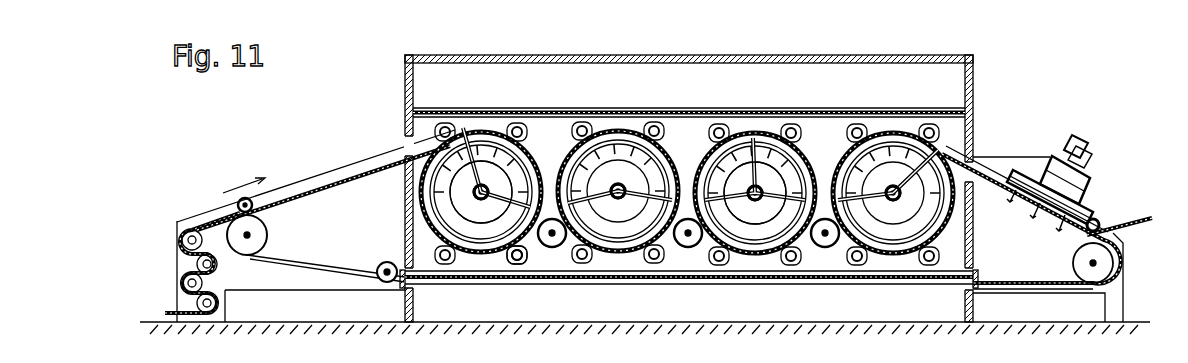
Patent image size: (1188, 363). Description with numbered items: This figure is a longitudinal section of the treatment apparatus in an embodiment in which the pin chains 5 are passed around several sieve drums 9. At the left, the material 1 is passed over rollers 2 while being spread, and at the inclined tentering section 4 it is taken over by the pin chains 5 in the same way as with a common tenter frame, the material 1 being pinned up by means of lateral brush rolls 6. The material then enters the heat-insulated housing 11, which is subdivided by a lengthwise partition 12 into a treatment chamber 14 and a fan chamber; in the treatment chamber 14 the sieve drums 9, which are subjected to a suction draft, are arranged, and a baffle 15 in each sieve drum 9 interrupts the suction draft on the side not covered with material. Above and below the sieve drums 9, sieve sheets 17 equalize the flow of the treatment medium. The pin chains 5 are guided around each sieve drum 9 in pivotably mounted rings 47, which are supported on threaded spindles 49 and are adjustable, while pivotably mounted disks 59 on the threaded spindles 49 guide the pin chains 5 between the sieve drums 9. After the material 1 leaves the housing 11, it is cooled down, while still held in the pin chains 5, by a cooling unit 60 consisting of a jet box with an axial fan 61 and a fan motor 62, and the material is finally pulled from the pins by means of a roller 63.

The material length 1 is at (168, 313).
The rollers 2 is at (200, 258).
The tentering section 4 is at (300, 183).
The pin chains 5 is at (256, 256).
The brush rolls 6 is at (238, 201).
The sieve drums 9 is at (463, 126).
The housing 11 is at (538, 58).
The lengthwise partition 12 is at (825, 132).
The treatment chamber 14 is at (562, 127).
The baffle 15 is at (467, 236).
The sieve sheets 17 is at (670, 112).
The pivotably mounted rings 47 is at (477, 258).
The threaded spindles 49 is at (250, 235).
The pivotably mounted disks 59 is at (552, 248).
The cooling unit 60 is at (1008, 178).
The axial fan 61 is at (1052, 156).
The fan motor 62 is at (1080, 138).
The roller 63 is at (1097, 222).